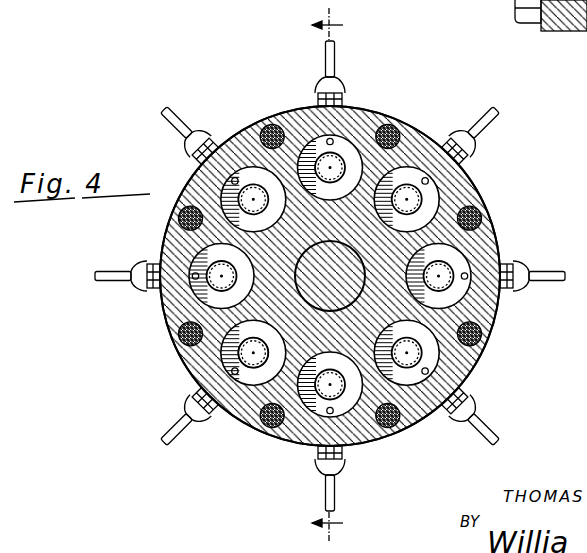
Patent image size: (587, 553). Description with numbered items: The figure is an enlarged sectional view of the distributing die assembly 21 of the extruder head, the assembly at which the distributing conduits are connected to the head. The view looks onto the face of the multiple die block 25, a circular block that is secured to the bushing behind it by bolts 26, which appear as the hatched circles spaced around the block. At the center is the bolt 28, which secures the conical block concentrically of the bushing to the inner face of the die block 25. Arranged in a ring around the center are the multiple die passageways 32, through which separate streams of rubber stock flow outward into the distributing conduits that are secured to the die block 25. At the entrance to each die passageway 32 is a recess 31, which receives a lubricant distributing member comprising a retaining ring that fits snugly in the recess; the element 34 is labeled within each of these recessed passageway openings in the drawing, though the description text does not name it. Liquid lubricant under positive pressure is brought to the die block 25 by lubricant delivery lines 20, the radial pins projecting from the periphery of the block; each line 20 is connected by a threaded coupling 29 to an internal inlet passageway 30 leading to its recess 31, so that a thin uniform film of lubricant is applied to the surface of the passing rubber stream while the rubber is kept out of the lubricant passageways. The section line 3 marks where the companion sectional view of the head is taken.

The section line 3— 3 is at (342, 275).
The lubricant delivery line 20 is at (333, 74).
The distributing die assembly 21 is at (497, 320).
The multiple die block 25 is at (420, 145).
The bolt 26 is at (268, 124).
The bolt 28 is at (301, 286).
The threaded coupling 29 is at (206, 142).
The internal inlet passageway 30 is at (430, 180).
The recess 31 is at (429, 194).
The multiple die passageway 32 is at (242, 348).
The bore 34 is at (398, 211).